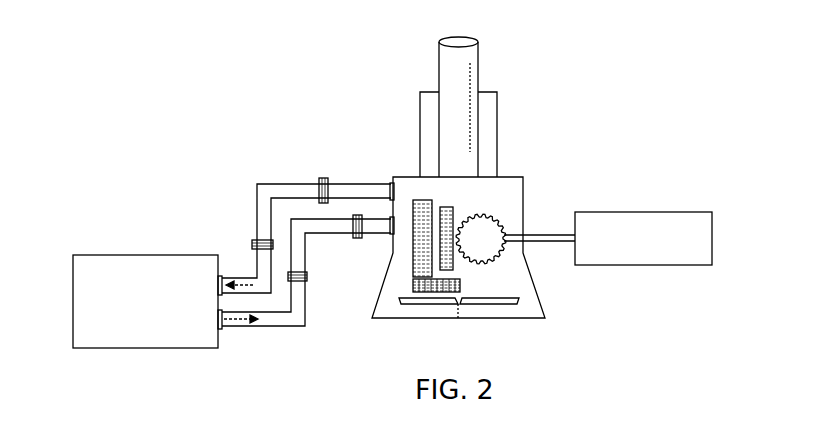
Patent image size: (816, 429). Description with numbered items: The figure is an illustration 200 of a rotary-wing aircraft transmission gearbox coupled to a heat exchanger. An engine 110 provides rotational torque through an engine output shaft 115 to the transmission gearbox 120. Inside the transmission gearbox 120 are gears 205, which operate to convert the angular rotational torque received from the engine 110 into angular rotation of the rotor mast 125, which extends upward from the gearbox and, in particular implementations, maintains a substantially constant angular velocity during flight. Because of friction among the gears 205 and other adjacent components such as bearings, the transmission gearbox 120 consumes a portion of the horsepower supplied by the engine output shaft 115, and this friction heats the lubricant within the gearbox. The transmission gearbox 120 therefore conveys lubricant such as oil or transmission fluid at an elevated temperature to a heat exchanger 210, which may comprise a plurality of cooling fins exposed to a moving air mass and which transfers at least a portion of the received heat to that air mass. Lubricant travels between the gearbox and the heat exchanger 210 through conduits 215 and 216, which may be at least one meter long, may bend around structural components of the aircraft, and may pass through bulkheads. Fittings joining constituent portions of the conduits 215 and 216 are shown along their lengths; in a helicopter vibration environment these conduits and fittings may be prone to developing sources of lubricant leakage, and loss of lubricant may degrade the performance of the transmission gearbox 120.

The illustration 200 is at (223, 65).
The rotor mast 125 is at (478, 68).
The transmission gearbox 120 is at (524, 183).
The engine output shaft 115 is at (545, 233).
The engine 110 is at (648, 211).
The gears 205 is at (458, 319).
The heat exchanger 210 is at (145, 349).
The conduit 215 is at (265, 180).
The conduit 216 is at (296, 333).